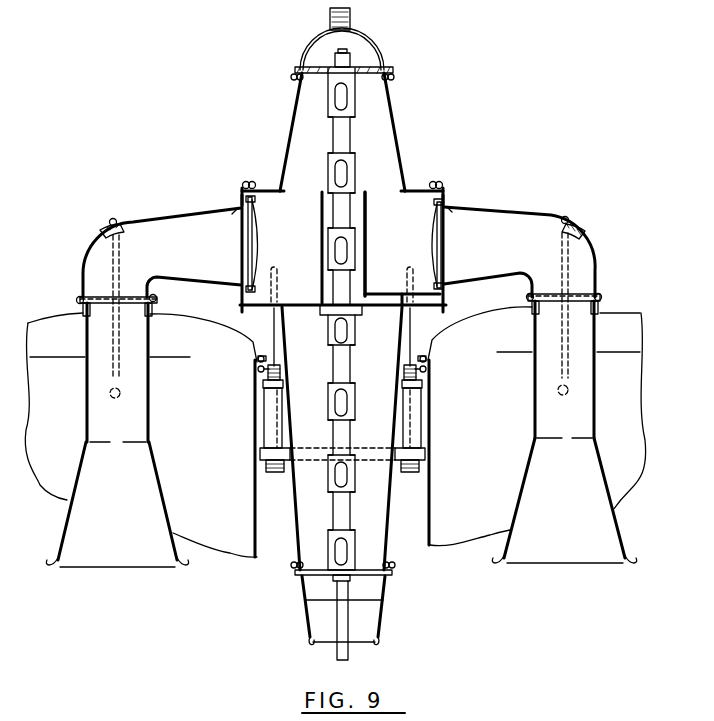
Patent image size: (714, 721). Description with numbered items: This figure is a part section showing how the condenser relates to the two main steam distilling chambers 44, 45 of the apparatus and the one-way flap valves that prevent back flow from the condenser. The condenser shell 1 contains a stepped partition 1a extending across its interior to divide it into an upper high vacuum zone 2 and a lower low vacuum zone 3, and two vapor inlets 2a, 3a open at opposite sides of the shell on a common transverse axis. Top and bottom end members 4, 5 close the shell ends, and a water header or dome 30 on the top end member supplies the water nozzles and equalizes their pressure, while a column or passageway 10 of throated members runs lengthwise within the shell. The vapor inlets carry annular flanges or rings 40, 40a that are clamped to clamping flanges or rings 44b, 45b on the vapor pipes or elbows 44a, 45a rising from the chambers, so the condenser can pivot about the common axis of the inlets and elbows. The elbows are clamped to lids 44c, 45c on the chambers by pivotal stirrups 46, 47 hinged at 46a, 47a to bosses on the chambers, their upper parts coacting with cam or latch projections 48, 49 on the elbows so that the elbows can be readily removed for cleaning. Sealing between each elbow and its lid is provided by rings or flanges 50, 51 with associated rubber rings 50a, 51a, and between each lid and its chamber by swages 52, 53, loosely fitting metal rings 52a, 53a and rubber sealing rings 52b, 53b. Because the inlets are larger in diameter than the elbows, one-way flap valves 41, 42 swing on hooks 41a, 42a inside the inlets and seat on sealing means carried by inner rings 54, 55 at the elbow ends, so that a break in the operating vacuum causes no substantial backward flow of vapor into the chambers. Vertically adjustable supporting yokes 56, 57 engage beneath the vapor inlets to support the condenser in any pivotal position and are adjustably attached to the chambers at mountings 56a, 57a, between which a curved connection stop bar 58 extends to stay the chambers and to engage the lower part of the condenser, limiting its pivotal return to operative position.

The water header or dome 30 is at (372, 36).
The top cover or end member 4 is at (368, 70).
The column or passageway assembly of throated members 10 is at (350, 95).
The shell 1 is at (395, 125).
The upper high vacuum zone 2 is at (310, 110).
The vapor inlet 2a is at (280, 186).
The vapor inlet 3a is at (408, 188).
The annular flange or ring 40 is at (247, 184).
The annular flange or ring 40a is at (437, 183).
The partition 1a is at (367, 263).
The clamping flange or ring 44b is at (242, 188).
The clamping flange or ring 45b is at (446, 186).
The one-way flap valve 41 is at (261, 240).
The hook 41a is at (257, 200).
The one-way flap valve 42 is at (427, 243).
The hook 42a is at (432, 198).
The vertically adjustable supporting yoke 56 is at (275, 325).
The vertically adjustable supporting yoke 57 is at (409, 323).
The swage 52 is at (264, 378).
The swage 53 is at (427, 378).
The rubber sealing ring 52b is at (258, 358).
The loosely fitting metal ring 52a is at (260, 369).
The rubber sealing ring 53b is at (427, 357).
The loosely fitting metal ring 53a is at (427, 368).
The yoke mounting 56a is at (270, 420).
The yoke mounting 57a is at (421, 428).
The curved connection stop bar 58 is at (283, 472).
The lower low vacuum zone 3 is at (312, 488).
The bottom cover or end member 5 is at (312, 580).
The vapor pipe or elbow 44a is at (160, 232).
The pivotal yoke or stirrup 46 is at (110, 221).
The cam or latch projection 48 is at (103, 236).
The sealing ring or flange 50 is at (80, 296).
The rubber sealing ring 50a is at (157, 298).
The lid 44c is at (62, 330).
The hinge 46a is at (110, 397).
The steam distilling chamber 44 is at (213, 533).
The vapor pipe or elbow 45a is at (508, 220).
The pivotal yoke or stirrup 47 is at (568, 220).
The cam or latch projection 49 is at (585, 233).
The sealing ring or flange 51 is at (600, 294).
The rubber sealing ring 51a is at (528, 297).
The lid 45c is at (612, 325).
The hinge 47a is at (570, 390).
The steam distilling chamber 45 is at (457, 522).
The inner ring 54 is at (237, 214).
The inner ring 55 is at (444, 211).